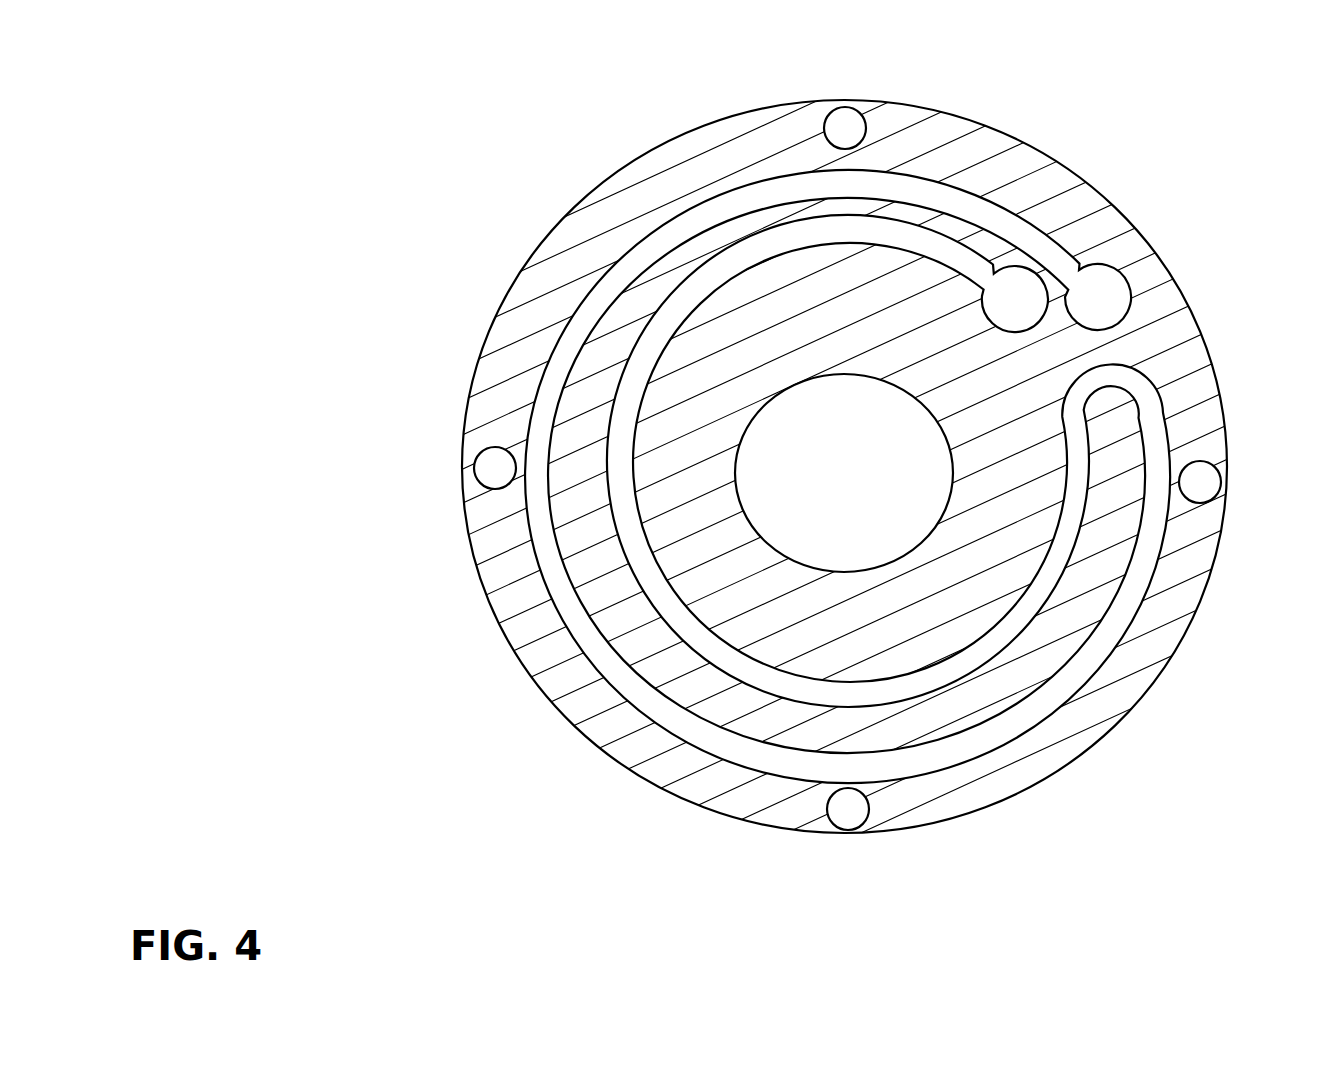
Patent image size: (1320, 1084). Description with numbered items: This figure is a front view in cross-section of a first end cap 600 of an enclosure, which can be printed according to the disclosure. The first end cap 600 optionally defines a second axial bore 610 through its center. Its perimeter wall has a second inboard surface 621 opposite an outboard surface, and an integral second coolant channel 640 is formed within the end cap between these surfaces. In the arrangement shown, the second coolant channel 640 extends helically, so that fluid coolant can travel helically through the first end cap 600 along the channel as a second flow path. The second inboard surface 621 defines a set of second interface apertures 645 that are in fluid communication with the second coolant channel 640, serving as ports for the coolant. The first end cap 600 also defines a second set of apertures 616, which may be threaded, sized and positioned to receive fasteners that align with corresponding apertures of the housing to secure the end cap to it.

The first end cap 600 is at (406, 176).
The second axial bore 610 is at (860, 492).
The second set of apertures 616 is at (865, 125).
The second inboard surface 621 is at (507, 577).
The second coolant channel 640 is at (1095, 660).
The second interface apertures 645 is at (1122, 272).